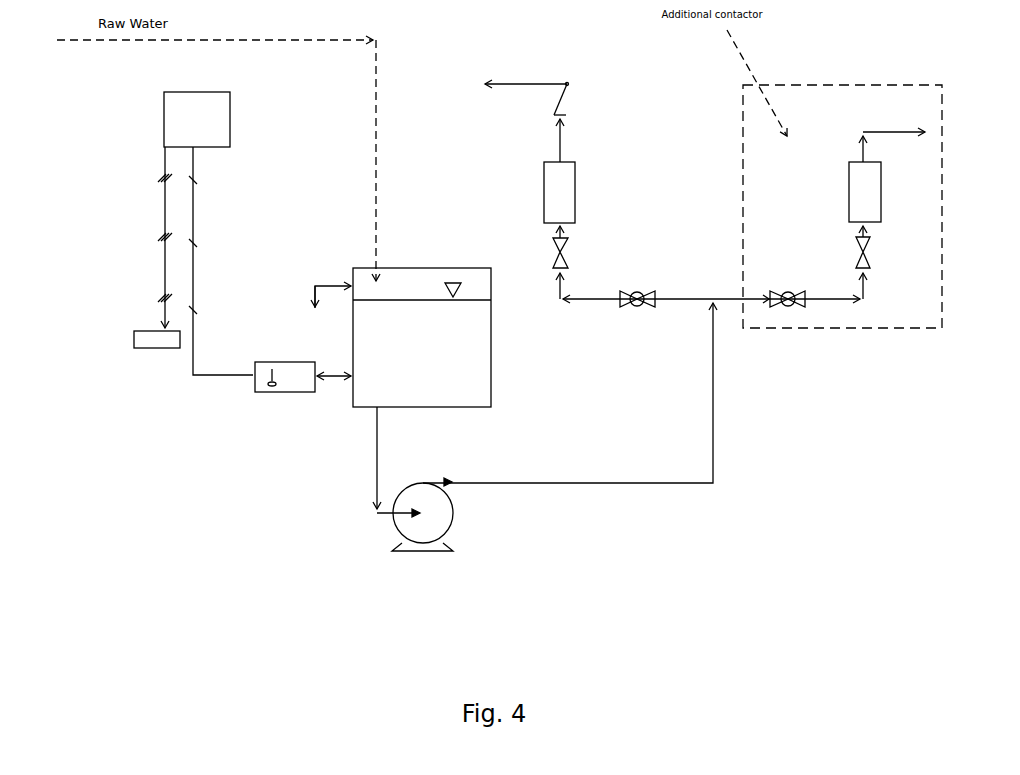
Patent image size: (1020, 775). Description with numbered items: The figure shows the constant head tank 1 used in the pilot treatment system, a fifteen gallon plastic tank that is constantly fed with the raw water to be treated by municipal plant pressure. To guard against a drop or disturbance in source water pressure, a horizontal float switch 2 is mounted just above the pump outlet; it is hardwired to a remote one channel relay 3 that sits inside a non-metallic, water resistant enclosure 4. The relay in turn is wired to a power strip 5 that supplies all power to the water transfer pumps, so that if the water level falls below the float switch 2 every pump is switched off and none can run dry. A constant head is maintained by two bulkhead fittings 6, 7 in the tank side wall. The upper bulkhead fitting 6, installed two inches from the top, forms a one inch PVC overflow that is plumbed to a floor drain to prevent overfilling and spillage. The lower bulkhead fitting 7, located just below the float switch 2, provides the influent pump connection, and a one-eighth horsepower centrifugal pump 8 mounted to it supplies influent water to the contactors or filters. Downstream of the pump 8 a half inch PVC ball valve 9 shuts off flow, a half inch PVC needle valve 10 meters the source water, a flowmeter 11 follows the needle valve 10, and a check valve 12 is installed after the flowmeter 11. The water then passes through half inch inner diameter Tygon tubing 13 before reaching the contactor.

The constant head tank 1 is at (494, 377).
The float switch 2 is at (263, 394).
The relay 3 is at (183, 110).
The enclosure 4 is at (179, 151).
The power strip 5 is at (132, 345).
The bulkhead fitting 6 is at (352, 281).
The bulkhead fitting 7 is at (350, 379).
The centrifugal pump 8 is at (413, 478).
The ball valve 9 is at (635, 291).
The needle valve 10 is at (564, 251).
The flowmeter 11 is at (577, 190).
The check valve 12 is at (546, 115).
The Tygon tubing 13 is at (510, 88).